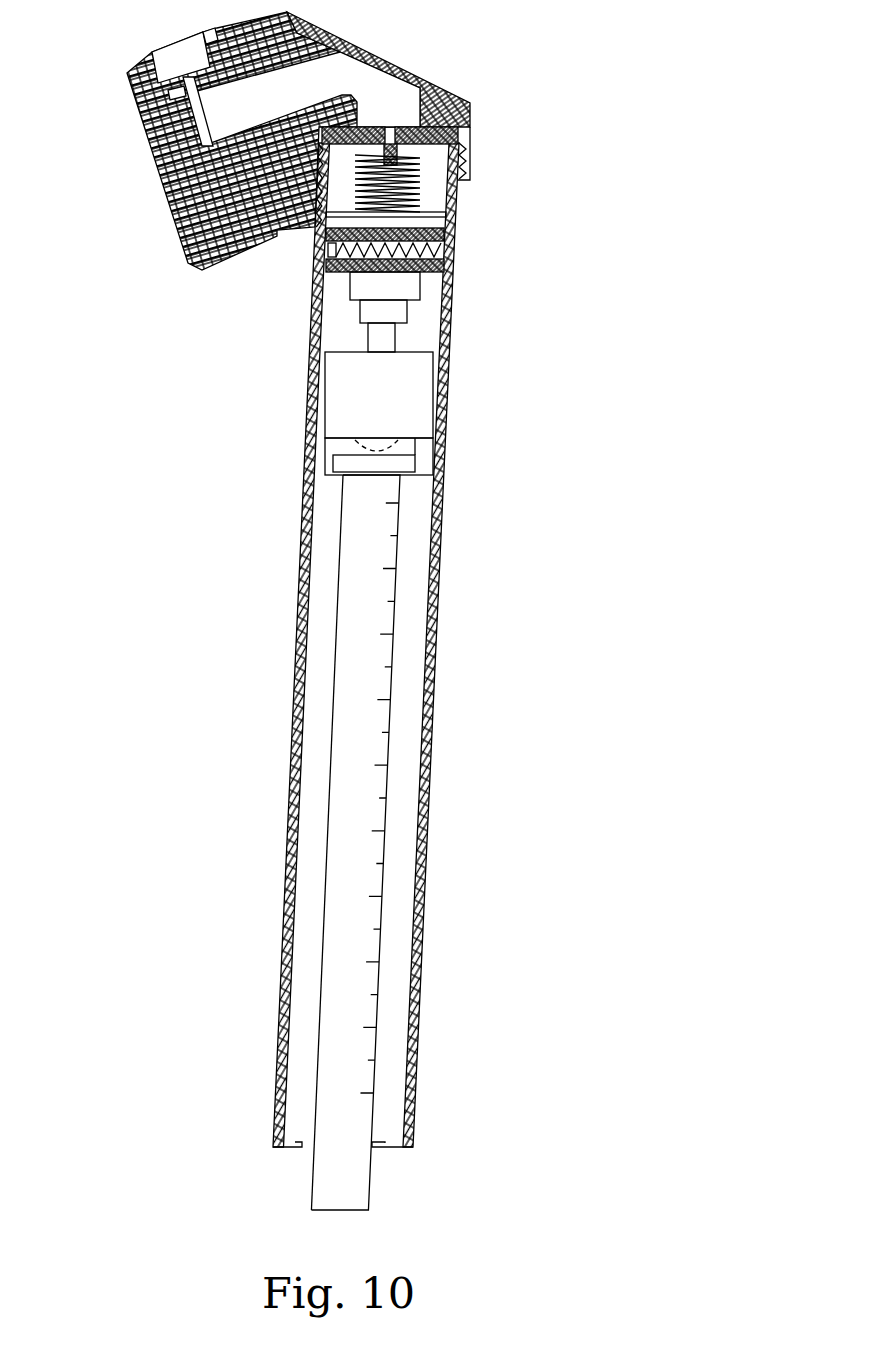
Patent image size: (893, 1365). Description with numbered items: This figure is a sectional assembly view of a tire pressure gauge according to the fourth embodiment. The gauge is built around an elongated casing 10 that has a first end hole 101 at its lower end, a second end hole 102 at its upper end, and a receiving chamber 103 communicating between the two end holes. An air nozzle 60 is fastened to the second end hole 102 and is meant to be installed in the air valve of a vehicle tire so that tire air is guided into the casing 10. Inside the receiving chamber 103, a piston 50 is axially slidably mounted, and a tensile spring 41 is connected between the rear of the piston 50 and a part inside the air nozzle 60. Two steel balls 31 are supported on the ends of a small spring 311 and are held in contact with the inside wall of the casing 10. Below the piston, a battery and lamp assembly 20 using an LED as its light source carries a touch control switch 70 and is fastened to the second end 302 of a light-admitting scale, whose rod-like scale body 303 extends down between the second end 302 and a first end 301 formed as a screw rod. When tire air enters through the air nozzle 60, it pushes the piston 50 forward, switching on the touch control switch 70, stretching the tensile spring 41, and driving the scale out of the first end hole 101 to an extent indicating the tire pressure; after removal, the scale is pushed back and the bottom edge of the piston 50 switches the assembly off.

The casing 10 is at (262, 630).
The first end hole 101 is at (288, 1152).
The second end hole 102 is at (461, 152).
The receiving chamber 103 is at (312, 762).
The battery and lamp assembly 20 is at (418, 448).
The first end 301 is at (370, 1210).
The second end 302 is at (433, 478).
The rod-like scale body 303 is at (393, 712).
The steel balls 31 is at (333, 236).
The small spring 311 is at (350, 273).
The tensile spring 41 is at (418, 185).
The piston 50 is at (407, 223).
The air nozzle 60 is at (134, 32).
The touch control switch 70 is at (423, 396).